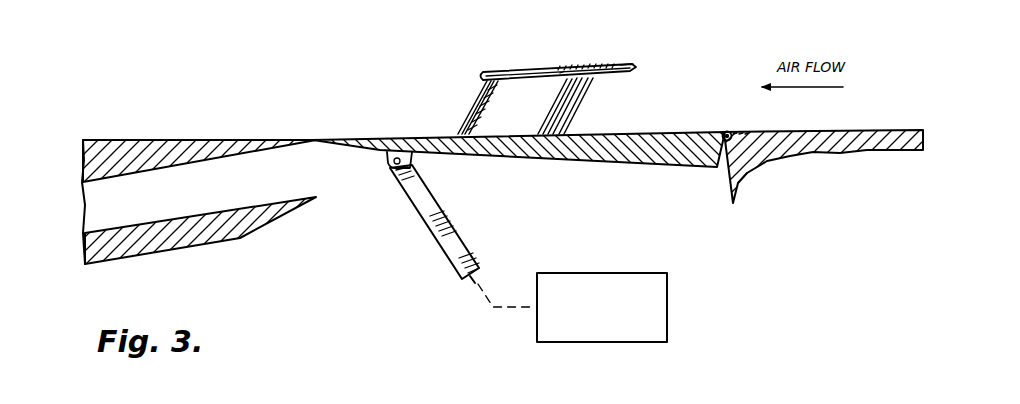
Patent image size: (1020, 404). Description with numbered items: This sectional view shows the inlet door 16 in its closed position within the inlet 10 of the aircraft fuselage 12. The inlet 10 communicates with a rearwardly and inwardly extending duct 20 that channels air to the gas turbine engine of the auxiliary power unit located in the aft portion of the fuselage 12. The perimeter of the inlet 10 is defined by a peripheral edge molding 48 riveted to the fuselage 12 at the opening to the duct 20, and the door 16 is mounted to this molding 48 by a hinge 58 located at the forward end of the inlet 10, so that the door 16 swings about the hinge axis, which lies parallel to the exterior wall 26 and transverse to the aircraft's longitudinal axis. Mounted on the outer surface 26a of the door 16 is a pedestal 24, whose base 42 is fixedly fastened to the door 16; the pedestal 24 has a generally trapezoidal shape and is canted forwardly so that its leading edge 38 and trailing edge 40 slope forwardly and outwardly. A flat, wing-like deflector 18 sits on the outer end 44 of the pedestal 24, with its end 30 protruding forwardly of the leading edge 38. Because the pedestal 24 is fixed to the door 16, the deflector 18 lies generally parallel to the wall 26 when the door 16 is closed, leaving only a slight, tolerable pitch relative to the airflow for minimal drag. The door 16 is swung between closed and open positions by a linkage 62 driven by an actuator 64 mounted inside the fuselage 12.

The inlet 10 is at (490, 123).
The fuselage 12 is at (788, 145).
The inlet door 16 is at (618, 150).
The deflector 18 is at (570, 62).
The duct 20 is at (196, 203).
The pedestal 24 is at (450, 130).
The exterior wall 26 is at (788, 168).
The outer surface 26a is at (668, 136).
The end of the deflector 30 is at (627, 67).
The leading edge 38 is at (573, 110).
The trailing edge 40 is at (455, 149).
The base 42 is at (520, 130).
The outer end 44 is at (563, 82).
The peripheral edge molding 48 is at (262, 137).
The hinge 58 is at (726, 131).
The linkage 62 is at (431, 237).
The actuator 64 is at (623, 272).